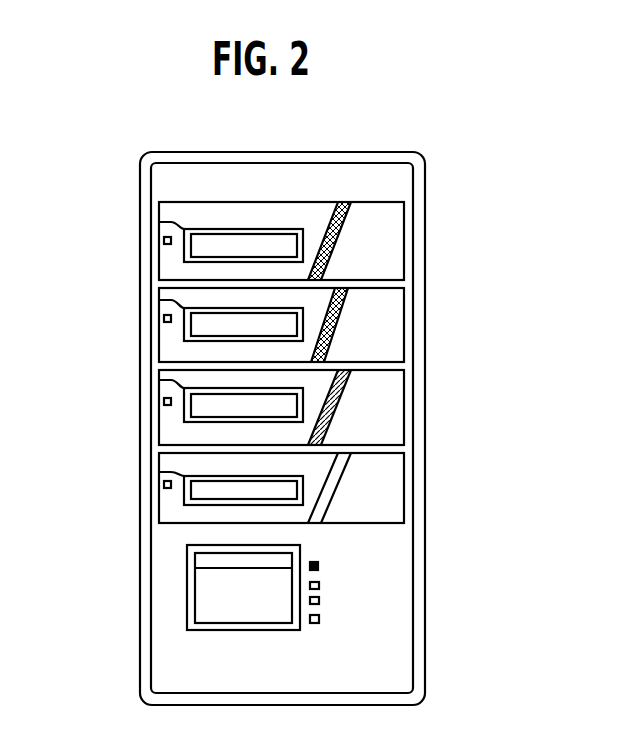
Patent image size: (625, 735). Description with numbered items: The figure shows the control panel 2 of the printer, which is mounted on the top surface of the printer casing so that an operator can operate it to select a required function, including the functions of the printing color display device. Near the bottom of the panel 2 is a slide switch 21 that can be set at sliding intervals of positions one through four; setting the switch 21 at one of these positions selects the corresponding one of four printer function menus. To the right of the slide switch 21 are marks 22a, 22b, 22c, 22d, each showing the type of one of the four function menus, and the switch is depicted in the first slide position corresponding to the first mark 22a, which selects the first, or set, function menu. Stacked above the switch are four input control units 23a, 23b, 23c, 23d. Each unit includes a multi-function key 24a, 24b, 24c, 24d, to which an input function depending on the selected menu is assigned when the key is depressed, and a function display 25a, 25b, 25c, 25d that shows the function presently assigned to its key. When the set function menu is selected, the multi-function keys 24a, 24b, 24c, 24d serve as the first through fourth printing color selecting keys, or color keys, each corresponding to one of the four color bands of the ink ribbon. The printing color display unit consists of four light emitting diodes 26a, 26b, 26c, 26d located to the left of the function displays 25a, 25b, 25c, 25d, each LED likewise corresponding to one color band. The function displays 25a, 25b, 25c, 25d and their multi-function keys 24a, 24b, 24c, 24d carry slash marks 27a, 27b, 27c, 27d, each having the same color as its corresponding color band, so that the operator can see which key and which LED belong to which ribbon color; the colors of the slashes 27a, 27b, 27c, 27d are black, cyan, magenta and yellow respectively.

The control panel 2 is at (410, 147).
The slide switch 21 is at (208, 607).
The first mark 22a is at (320, 568).
The second mark 22b is at (320, 586).
The third mark 22c is at (320, 601).
The fourth mark 22d is at (320, 619).
The first input control unit 23a is at (171, 197).
The second input control unit 23b is at (180, 277).
The third input control unit 23c is at (176, 367).
The fourth input control unit 23d is at (181, 447).
The first multi-function key 24a is at (400, 250).
The second multi-function key 24b is at (398, 328).
The third multi-function key 24c is at (398, 410).
The fourth multi-function key 24d is at (398, 490).
The first function display 25a is at (170, 222).
The second function display 25b is at (170, 300).
The third function display 25c is at (167, 380).
The fourth function display 25d is at (167, 472).
The first light emitting diode 26a is at (163, 240).
The second light emitting diode 26b is at (163, 318).
The third light emitting diode 26c is at (163, 401).
The fourth light emitting diode 26d is at (163, 485).
The first slash mark 27a is at (333, 254).
The second slash mark 27b is at (337, 328).
The third slash mark 27c is at (337, 413).
The fourth slash mark 27d is at (332, 502).